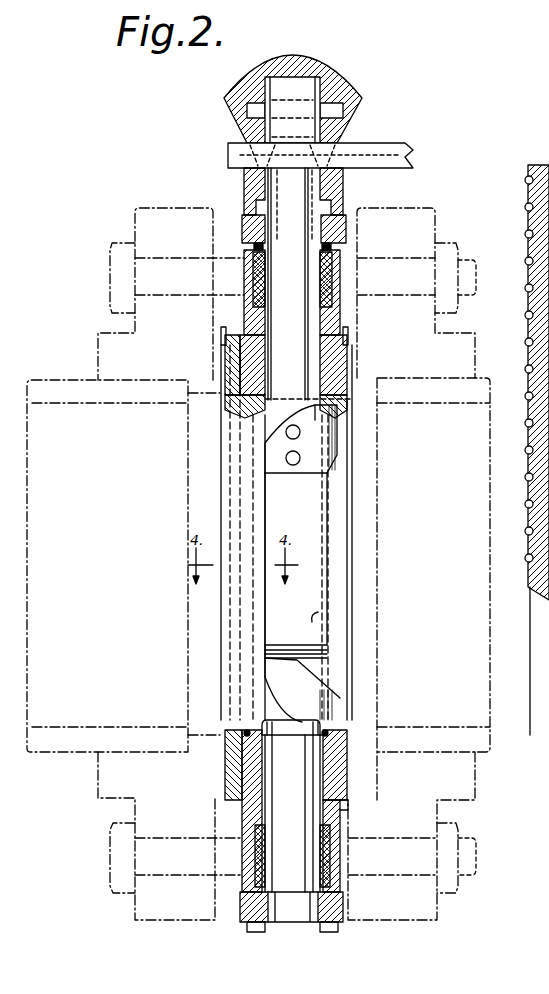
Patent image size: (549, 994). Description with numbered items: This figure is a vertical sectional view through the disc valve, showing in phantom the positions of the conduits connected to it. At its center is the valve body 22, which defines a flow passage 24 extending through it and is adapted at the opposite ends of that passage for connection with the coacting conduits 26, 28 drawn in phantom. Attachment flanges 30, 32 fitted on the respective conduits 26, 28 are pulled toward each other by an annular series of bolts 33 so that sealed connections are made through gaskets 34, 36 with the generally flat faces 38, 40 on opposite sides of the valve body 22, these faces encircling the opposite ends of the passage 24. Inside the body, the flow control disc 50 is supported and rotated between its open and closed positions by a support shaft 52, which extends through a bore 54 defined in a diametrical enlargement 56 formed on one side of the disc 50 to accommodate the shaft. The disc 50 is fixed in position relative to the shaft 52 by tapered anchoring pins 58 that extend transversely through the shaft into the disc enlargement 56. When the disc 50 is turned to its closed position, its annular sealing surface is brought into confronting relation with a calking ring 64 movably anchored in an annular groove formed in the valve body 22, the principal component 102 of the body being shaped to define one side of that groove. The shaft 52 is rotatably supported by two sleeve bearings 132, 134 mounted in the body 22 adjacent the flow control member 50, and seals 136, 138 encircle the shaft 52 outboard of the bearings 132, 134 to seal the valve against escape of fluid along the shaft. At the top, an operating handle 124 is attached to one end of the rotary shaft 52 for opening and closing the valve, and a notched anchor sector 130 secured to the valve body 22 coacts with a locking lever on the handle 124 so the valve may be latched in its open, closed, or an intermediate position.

The valve body 22 is at (350, 797).
The flow passage 24 is at (342, 732).
The conduit 26 is at (67, 753).
The conduit 28 is at (487, 760).
The attachment flange 30 is at (135, 912).
The attachment flange 32 is at (414, 922).
The bolts 33 is at (443, 227).
The gasket 34 is at (220, 342).
The gasket 36 is at (347, 330).
The flat face 38 is at (227, 371).
The flat face 40 is at (315, 367).
The flow control disc 50 is at (242, 628).
The support shaft 52 is at (285, 327).
The bore 54 is at (332, 623).
The diametrical enlargement 56 is at (328, 505).
The tapered anchoring pins 58 is at (303, 458).
The calking ring 64 is at (250, 413).
The principal component of the valve body 102 is at (248, 797).
The operating handle 124 is at (335, 72).
The notched anchor sector 130 is at (388, 152).
The sleeve bearing 132 is at (320, 352).
The sleeve bearing 134 is at (327, 767).
The seal 136 is at (323, 258).
The seal 138 is at (342, 867).